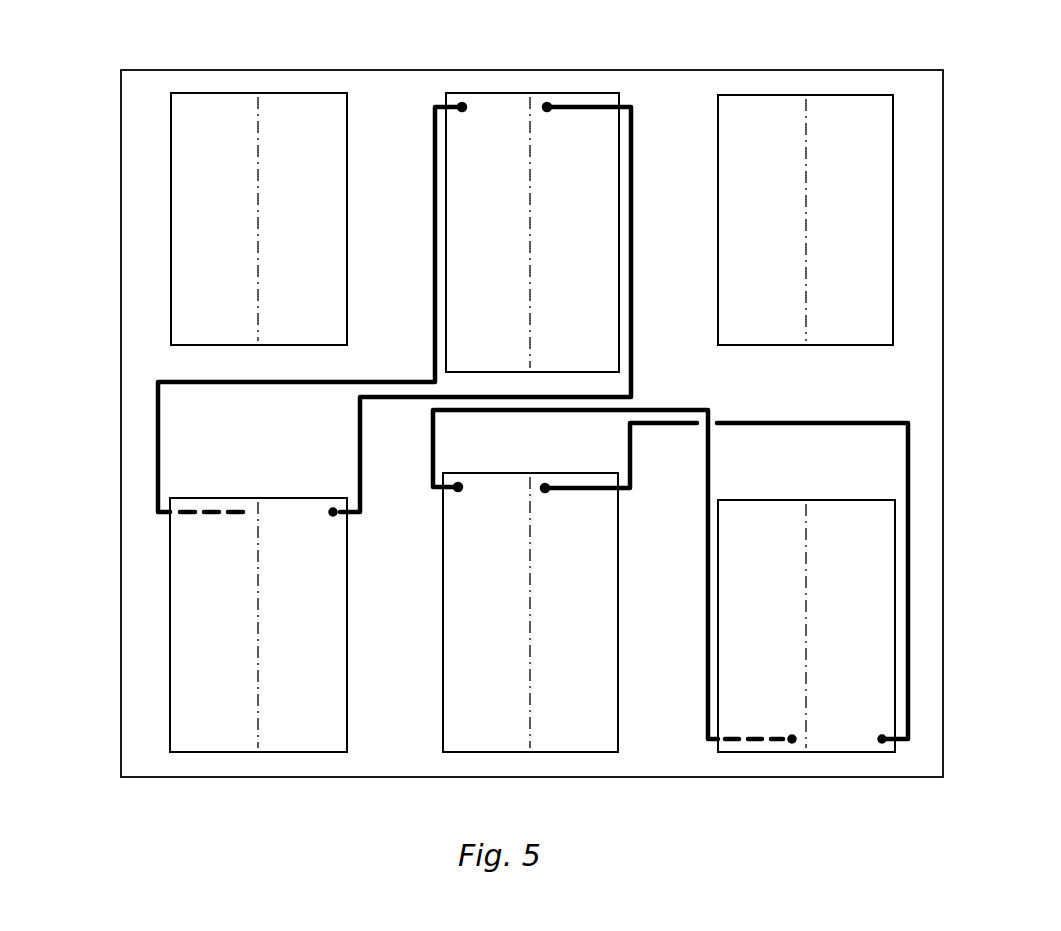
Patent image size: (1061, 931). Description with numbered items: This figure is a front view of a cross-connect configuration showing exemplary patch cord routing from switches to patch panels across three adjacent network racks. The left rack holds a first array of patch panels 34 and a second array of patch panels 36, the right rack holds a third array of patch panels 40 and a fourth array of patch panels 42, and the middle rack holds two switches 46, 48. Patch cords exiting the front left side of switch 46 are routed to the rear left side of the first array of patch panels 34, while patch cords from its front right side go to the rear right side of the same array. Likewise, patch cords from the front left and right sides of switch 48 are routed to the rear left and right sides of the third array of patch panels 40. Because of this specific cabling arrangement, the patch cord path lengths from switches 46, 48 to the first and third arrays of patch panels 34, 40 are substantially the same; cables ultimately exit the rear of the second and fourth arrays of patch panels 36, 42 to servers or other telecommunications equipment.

The first array of patch panels 34 is at (250, 498).
The second array of patch panels 36 is at (225, 345).
The third array of patch panels 40 is at (845, 500).
The fourth array of patch panels 42 is at (835, 345).
The switch 46 is at (487, 93).
The switch 48 is at (507, 752).